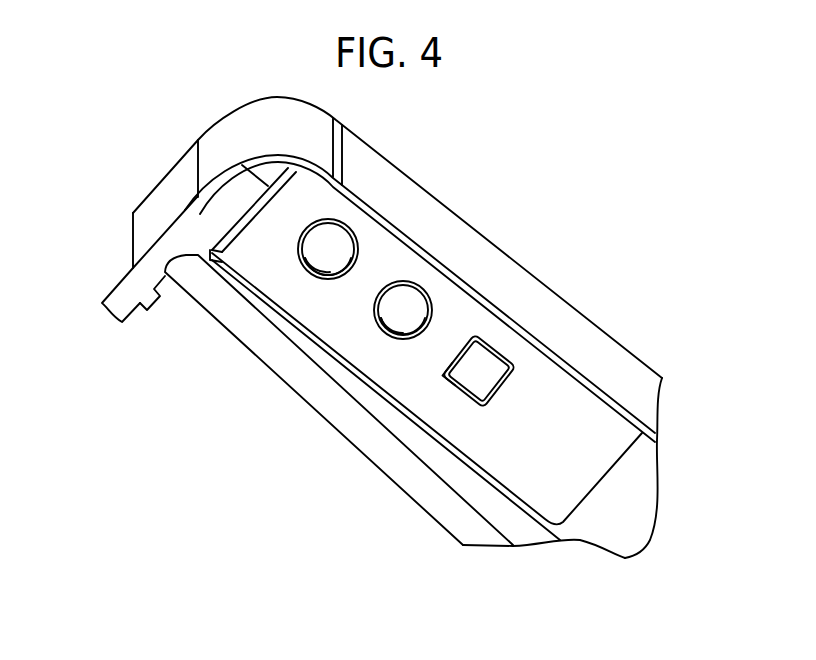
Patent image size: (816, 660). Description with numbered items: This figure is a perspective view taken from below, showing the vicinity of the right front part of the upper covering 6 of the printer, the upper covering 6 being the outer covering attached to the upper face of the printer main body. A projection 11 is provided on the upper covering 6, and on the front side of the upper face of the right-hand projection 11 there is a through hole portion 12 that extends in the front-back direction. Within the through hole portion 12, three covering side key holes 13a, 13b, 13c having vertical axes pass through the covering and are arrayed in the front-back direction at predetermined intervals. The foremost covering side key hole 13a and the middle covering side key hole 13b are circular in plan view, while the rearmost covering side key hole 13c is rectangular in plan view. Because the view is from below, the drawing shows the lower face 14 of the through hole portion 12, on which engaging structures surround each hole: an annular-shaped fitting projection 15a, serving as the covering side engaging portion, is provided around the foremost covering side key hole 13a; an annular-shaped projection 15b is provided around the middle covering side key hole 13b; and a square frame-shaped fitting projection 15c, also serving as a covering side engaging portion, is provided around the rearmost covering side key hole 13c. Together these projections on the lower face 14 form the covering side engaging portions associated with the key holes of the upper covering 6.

The upper covering 6 is at (522, 190).
The projection 11 is at (483, 255).
The through hole portion 12 is at (575, 393).
The foremost covering side key hole 13a is at (326, 273).
The middle covering side key hole 13b is at (403, 333).
The rearmost covering side key hole 13c is at (498, 368).
The lower face of the through hole portion 14 is at (505, 475).
The annular-shaped fitting projection 15a is at (316, 274).
The annular-shaped projection 15b is at (383, 337).
The square frame-shaped fitting projection 15c is at (463, 400).